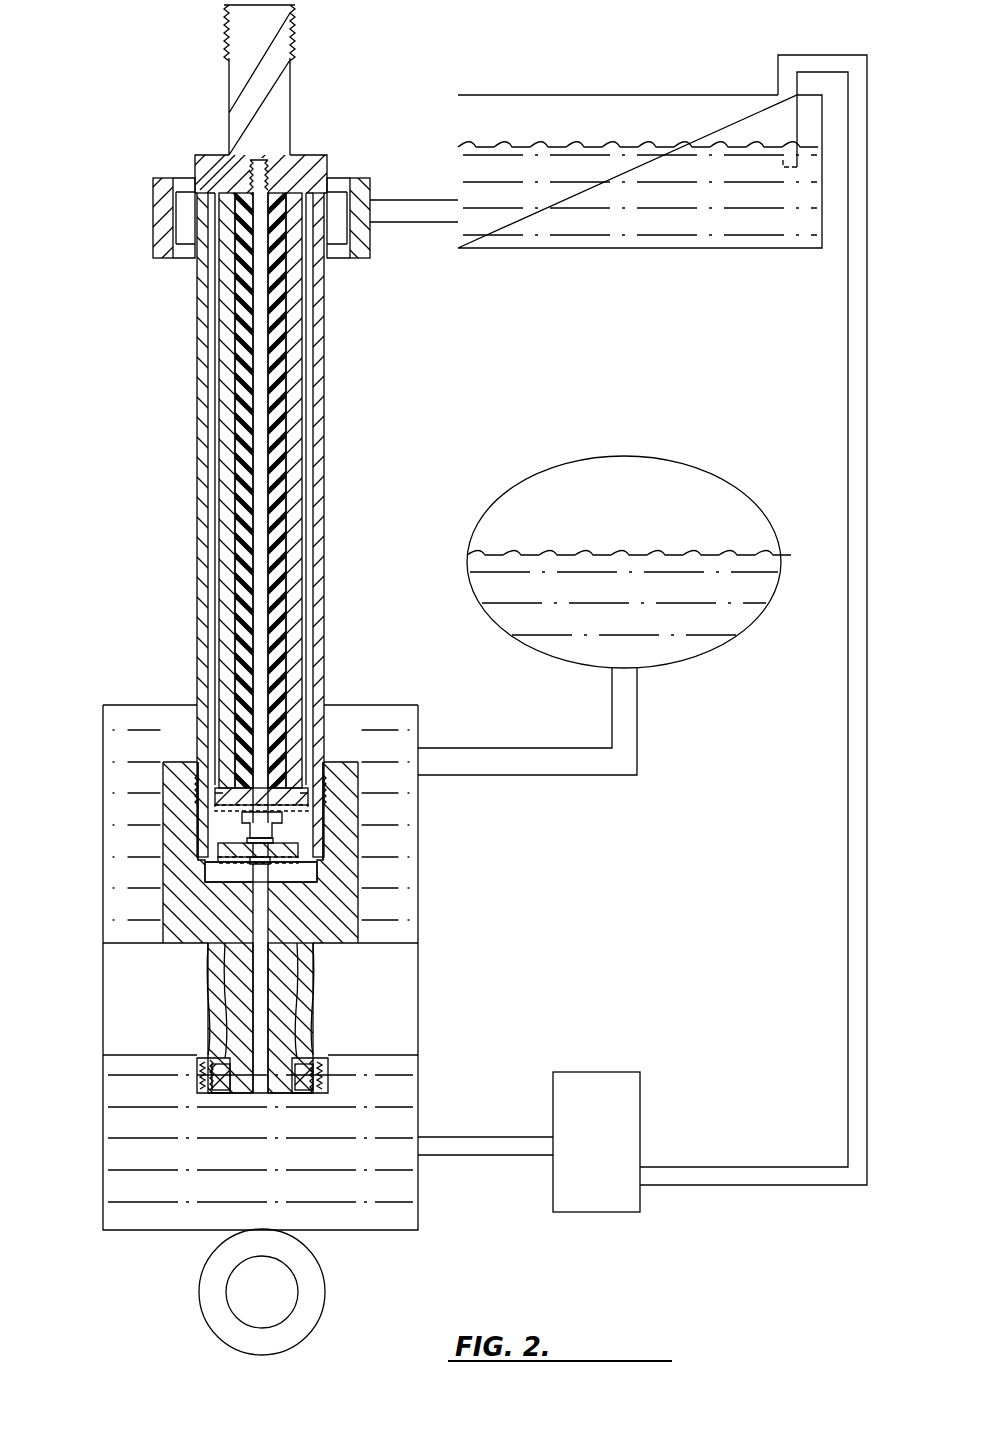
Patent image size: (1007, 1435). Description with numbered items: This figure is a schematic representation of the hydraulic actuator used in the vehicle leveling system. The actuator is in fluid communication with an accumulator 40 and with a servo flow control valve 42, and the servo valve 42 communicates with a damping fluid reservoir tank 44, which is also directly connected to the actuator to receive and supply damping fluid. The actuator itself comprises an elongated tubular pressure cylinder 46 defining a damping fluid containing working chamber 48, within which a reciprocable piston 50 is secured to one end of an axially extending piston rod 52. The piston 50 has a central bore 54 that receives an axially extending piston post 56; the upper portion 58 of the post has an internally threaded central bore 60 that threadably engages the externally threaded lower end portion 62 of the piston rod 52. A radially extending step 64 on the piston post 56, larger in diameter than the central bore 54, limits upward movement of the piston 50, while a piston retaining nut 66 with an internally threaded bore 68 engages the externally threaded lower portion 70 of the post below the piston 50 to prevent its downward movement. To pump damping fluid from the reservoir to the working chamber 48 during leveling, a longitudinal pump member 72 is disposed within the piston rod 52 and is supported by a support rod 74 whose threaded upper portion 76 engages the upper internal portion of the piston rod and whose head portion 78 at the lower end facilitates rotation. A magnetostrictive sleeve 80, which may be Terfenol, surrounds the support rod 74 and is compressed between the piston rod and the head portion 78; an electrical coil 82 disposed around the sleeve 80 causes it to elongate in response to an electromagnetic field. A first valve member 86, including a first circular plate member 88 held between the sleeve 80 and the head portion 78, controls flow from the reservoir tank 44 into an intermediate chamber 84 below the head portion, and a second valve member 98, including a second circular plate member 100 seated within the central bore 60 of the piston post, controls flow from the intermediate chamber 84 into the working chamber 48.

The accumulator 40 is at (690, 470).
The servo flow control valve 42 is at (641, 1095).
The damping fluid reservoir tank 44 is at (628, 95).
The pressure cylinder 46 is at (135, 705).
The working chamber 48 is at (118, 1192).
The piston 50 is at (142, 1032).
The piston rod 52 is at (197, 526).
The central bore 54 is at (292, 1014).
The piston post 56 is at (168, 903).
The upper portion 58 is at (163, 780).
The internally threaded central bore 60 is at (308, 868).
The externally threaded lower end portion 62 is at (330, 803).
The step 64 is at (165, 945).
The piston retaining nut 66 is at (328, 1082).
The internally threaded bore 68 is at (300, 1085).
The externally threaded lower portion 70 is at (240, 1088).
The longitudinal pump member 72 is at (217, 413).
The support rod 74 is at (260, 378).
The upper portion 76 is at (272, 167).
The head portion 78 is at (285, 828).
The magnetostrictive sleeve 80 is at (245, 327).
The electrical coil 82 is at (293, 455).
The intermediate chamber 84 is at (305, 850).
The first valve member 86 is at (315, 775).
The first circular plate member 88 is at (200, 793).
The second valve member 98 is at (198, 828).
The second circular plate member 100 is at (305, 865).